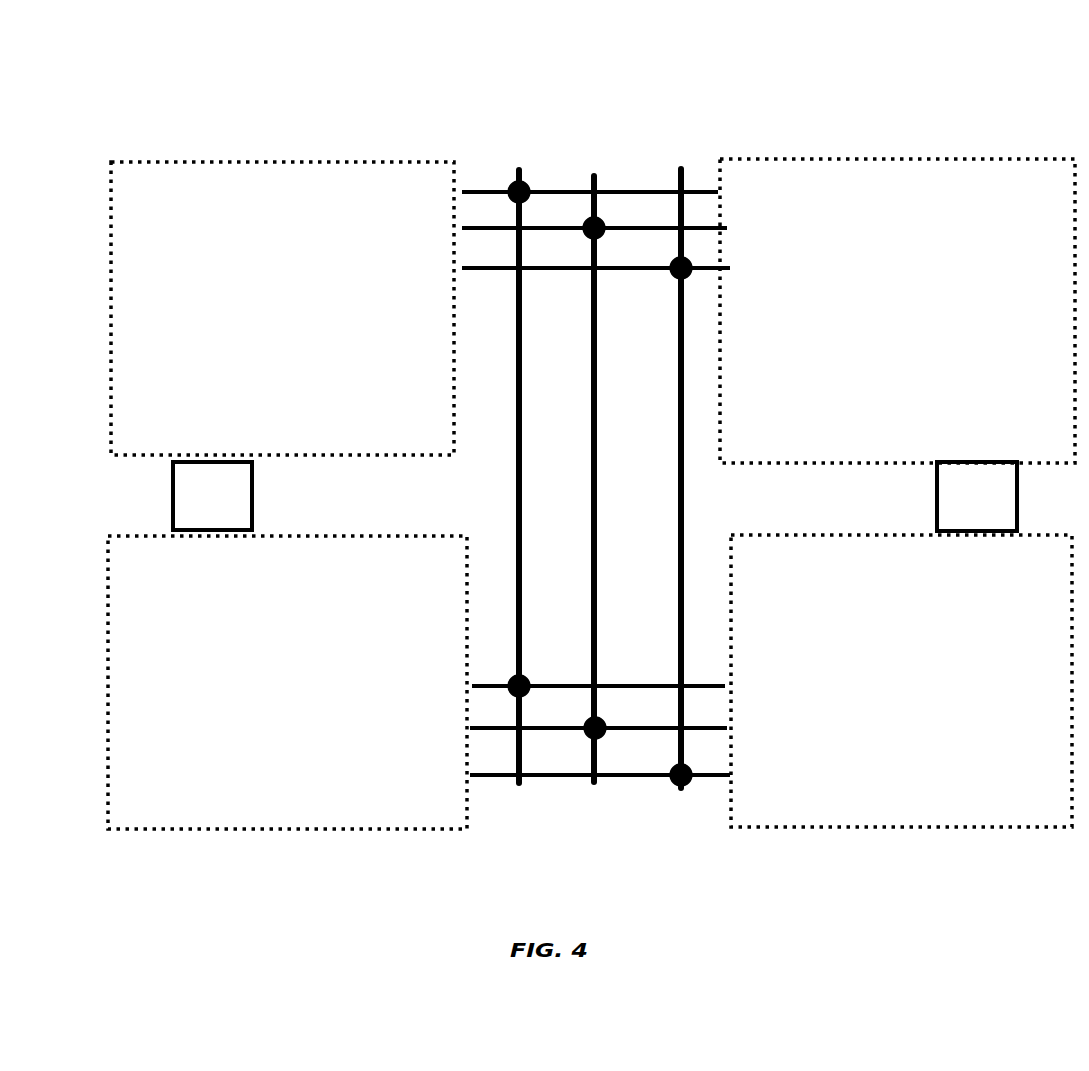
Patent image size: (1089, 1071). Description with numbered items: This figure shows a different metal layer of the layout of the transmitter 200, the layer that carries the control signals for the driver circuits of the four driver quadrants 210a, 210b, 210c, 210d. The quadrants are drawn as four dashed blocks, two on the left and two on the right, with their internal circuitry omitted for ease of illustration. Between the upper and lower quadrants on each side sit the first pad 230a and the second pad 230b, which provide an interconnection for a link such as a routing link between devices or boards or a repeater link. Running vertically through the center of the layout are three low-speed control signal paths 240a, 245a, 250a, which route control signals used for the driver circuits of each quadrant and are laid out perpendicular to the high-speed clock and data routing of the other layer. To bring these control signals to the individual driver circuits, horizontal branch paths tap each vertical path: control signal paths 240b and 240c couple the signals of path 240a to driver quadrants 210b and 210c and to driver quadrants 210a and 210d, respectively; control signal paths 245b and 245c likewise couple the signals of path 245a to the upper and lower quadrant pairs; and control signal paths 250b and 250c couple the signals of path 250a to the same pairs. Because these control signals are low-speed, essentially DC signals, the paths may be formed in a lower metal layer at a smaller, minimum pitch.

The transmitter 200 is at (99, 58).
The driver quadrant 210a is at (287, 722).
The driver quadrant 210b is at (282, 271).
The driver quadrant 210c is at (897, 273).
The driver quadrant 210d is at (901, 724).
The first pad 230a is at (261, 496).
The second pad 230b is at (930, 496).
The low-speed control signal path 240a is at (472, 476).
The control signal path 240b is at (570, 160).
The control signal path 240c is at (598, 647).
The low-speed control signal path 245a is at (512, 479).
The control signal path 245b is at (594, 195).
The control signal path 245c is at (598, 763).
The low-speed control signal path 250a is at (730, 478).
The control signal path 250b is at (596, 294).
The control signal path 250c is at (637, 813).